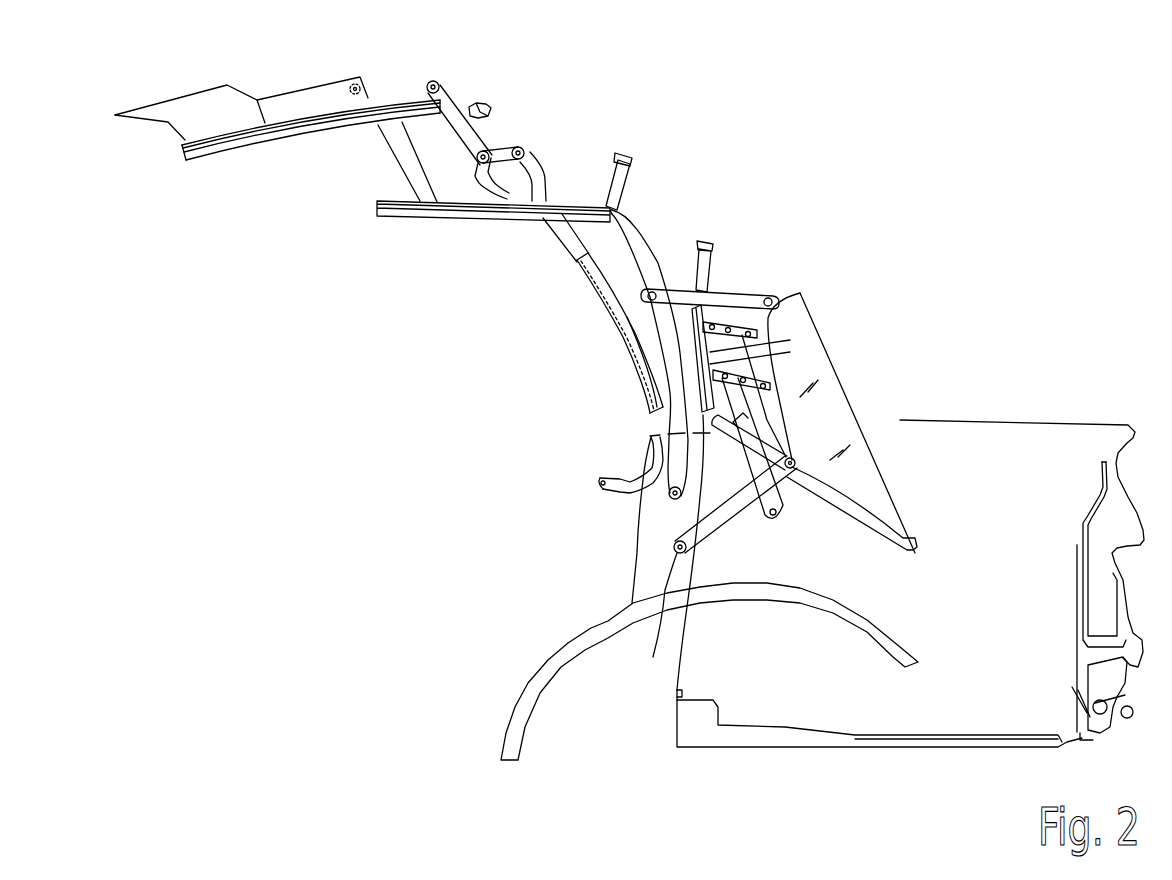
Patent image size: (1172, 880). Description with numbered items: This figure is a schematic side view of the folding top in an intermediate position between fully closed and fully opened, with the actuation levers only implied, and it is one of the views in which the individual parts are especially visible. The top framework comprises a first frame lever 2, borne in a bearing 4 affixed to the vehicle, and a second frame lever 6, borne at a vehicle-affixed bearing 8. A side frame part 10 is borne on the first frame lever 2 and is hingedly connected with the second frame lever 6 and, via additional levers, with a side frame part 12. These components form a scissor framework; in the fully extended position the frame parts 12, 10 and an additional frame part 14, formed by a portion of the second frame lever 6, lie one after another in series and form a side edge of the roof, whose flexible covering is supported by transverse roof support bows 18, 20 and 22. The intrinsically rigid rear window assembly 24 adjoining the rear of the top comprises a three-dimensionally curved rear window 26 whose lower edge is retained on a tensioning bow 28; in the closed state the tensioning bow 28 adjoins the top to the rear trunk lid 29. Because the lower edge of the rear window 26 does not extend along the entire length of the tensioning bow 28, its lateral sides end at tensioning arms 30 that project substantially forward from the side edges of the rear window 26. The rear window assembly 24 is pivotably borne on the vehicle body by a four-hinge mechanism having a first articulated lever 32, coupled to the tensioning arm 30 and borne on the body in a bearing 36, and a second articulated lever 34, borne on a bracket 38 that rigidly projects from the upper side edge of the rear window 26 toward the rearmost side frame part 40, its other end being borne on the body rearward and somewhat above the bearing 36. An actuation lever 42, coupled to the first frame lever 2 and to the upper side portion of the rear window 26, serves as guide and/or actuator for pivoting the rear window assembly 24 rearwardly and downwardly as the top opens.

The first frame lever 2 is at (633, 236).
The bearing 4 is at (645, 521).
The second frame lever 6 is at (573, 236).
The bearing 8 is at (600, 485).
The side frame part 10 is at (573, 201).
The side frame part 12 is at (405, 101).
The frame part 14 is at (623, 312).
The roof support bow 18 is at (484, 105).
The roof support bow 20 is at (625, 158).
The roof support bow 22 is at (705, 241).
The rear window assembly 24 is at (838, 306).
The rear window 26 is at (838, 404).
The tensioning bow 28 is at (917, 553).
The rear trunk lid 29 is at (1007, 420).
The tensioning arm 30 is at (732, 520).
The first articulated lever 32 is at (708, 528).
The second articulated lever 34 is at (778, 518).
The bearing 36 is at (653, 657).
The bracket 38 is at (762, 352).
The rearmost side frame part 40 is at (700, 380).
The actuation lever 42 is at (747, 290).